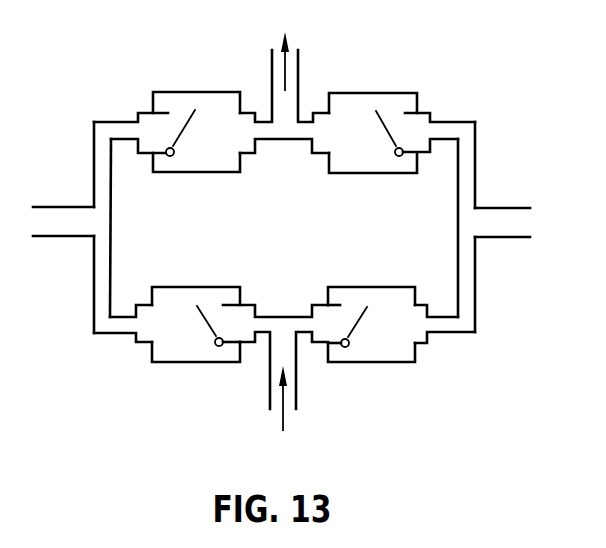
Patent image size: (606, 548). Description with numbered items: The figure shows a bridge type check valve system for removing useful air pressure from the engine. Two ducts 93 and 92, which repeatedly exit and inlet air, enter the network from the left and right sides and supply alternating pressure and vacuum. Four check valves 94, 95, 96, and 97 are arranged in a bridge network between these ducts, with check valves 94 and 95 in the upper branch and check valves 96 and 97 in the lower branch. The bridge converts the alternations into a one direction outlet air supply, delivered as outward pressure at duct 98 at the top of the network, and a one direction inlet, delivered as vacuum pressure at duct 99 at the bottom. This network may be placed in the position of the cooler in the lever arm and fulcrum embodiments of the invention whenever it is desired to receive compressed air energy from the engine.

The duct 92 is at (487, 207).
The duct 93 is at (73, 206).
The check valve 94 is at (181, 91).
The check valve 95 is at (386, 93).
The check valve 96 is at (182, 363).
The check valve 97 is at (373, 364).
The duct 98 is at (298, 66).
The duct 99 is at (297, 392).